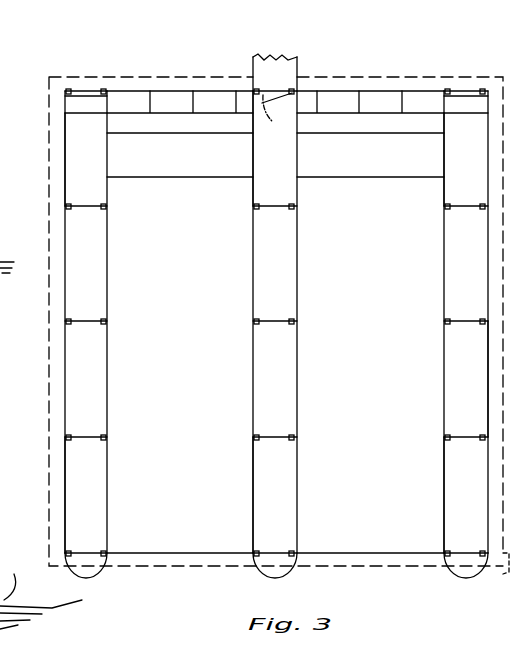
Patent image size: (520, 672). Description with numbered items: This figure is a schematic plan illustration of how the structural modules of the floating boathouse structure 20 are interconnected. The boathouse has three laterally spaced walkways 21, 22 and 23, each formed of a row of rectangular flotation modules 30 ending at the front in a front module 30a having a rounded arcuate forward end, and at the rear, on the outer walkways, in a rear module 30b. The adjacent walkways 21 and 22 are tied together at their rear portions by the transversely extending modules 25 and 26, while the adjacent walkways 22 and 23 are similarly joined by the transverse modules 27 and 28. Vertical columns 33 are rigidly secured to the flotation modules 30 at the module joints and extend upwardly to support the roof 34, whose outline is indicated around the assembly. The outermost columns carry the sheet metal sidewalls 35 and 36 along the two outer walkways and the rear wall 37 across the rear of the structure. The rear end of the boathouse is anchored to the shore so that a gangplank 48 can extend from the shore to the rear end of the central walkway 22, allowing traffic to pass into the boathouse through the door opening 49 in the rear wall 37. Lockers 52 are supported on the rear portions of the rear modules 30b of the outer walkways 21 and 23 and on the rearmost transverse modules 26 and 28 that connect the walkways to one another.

The floating boathouse structure 20 is at (424, 67).
The walkway 21 is at (113, 350).
The walkway 22 is at (304, 359).
The walkway 23 is at (436, 264).
The transverse module 25 is at (184, 168).
The transverse module 26 is at (160, 113).
The transverse module 27 is at (358, 172).
The transverse module 28 is at (403, 127).
The flotation module 30 is at (102, 272).
The front module 30a is at (98, 512).
The rear module 30b is at (450, 157).
The vertical column 33 is at (108, 322).
The roof 34 is at (500, 578).
The sidewall 35 is at (65, 352).
The sidewall 36 is at (490, 380).
The rear wall 37 is at (368, 91).
The gangplank 48 is at (290, 63).
The door opening 49 is at (263, 90).
The locker 52 is at (480, 67).